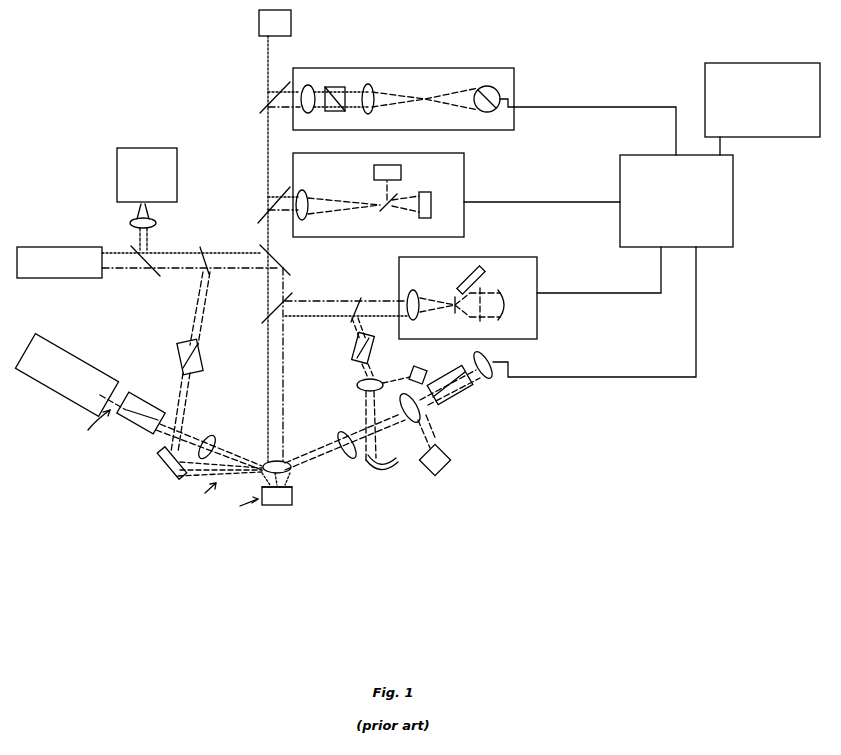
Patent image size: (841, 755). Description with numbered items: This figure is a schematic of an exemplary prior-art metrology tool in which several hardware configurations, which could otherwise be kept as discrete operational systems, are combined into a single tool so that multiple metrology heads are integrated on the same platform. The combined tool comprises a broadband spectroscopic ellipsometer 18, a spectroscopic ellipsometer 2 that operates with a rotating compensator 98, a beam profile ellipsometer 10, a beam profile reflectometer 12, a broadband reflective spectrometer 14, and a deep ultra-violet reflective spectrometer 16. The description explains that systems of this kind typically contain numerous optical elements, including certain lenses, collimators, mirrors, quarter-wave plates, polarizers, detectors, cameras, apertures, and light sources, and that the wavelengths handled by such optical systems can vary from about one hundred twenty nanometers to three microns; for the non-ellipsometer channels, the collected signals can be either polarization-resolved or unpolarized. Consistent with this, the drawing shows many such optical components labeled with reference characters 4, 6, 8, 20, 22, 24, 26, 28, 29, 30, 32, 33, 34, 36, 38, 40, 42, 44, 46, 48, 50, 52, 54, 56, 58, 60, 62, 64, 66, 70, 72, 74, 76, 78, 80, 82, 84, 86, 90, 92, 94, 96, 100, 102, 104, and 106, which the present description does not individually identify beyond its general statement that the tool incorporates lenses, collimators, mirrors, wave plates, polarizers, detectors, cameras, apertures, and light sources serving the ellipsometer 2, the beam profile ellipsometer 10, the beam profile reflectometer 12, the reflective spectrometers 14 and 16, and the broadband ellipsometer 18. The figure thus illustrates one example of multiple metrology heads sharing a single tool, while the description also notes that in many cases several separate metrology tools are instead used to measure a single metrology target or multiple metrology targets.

The spectroscopic ellipsometer with rotating compensator 2 is at (93, 425).
The illumination direction 4 is at (241, 505).
The sample 6 is at (292, 500).
The sample surface 8 is at (292, 489).
The beam profile ellipsometer 10 is at (412, 68).
The beam profile reflectometer 12 is at (464, 158).
The broadband reflective spectrometer 14 is at (468, 286).
The deep ultra-violet reflective spectrometer 16 is at (490, 257).
The broadband spectroscopic ellipsometer 18 is at (200, 492).
The laser 20 is at (52, 290).
The light source 22 is at (145, 148).
The laser beam 24 is at (137, 269).
The light source beam 26 is at (152, 236).
The lens 28 is at (156, 221).
The beam splitter 29 is at (152, 280).
The beam splitter 30 is at (288, 262).
The objective lens 32 is at (295, 449).
The objective lens 33 is at (281, 458).
The lens 34 is at (306, 85).
The filter cube 36 is at (333, 87).
The lens 38 is at (370, 84).
The camera 40 is at (492, 88).
The beam splitter 42 is at (262, 318).
The beam splitter 44 is at (262, 212).
The beam splitter 46 is at (264, 104).
The processor 48 is at (676, 201).
The lens 50 is at (306, 192).
The mirror 52 is at (385, 208).
The detector 54 is at (431, 202).
The detector 56 is at (401, 172).
The signal line 58 is at (537, 268).
The lens 60 is at (416, 292).
The pinhole 62 is at (456, 312).
The grating 64 is at (505, 310).
The detector array 66 is at (484, 278).
The prism 70 is at (200, 362).
The mirror 72 is at (160, 468).
The curved mirror 74 is at (392, 470).
The lens 76 is at (357, 386).
The detector 78 is at (421, 368).
The prism 80 is at (372, 348).
The beam splitter 82 is at (206, 250).
The beam splitter 84 is at (356, 298).
The detector 86 is at (291, 17).
The light source 90 is at (30, 378).
The polarizer 92 is at (140, 428).
The lens 94 is at (212, 440).
The lens 96 is at (350, 430).
The rotating compensator 98 is at (418, 412).
The detector 100 is at (447, 452).
The analyzer 102 is at (456, 396).
The display 104 is at (499, 390).
The light beam 106 is at (118, 398).